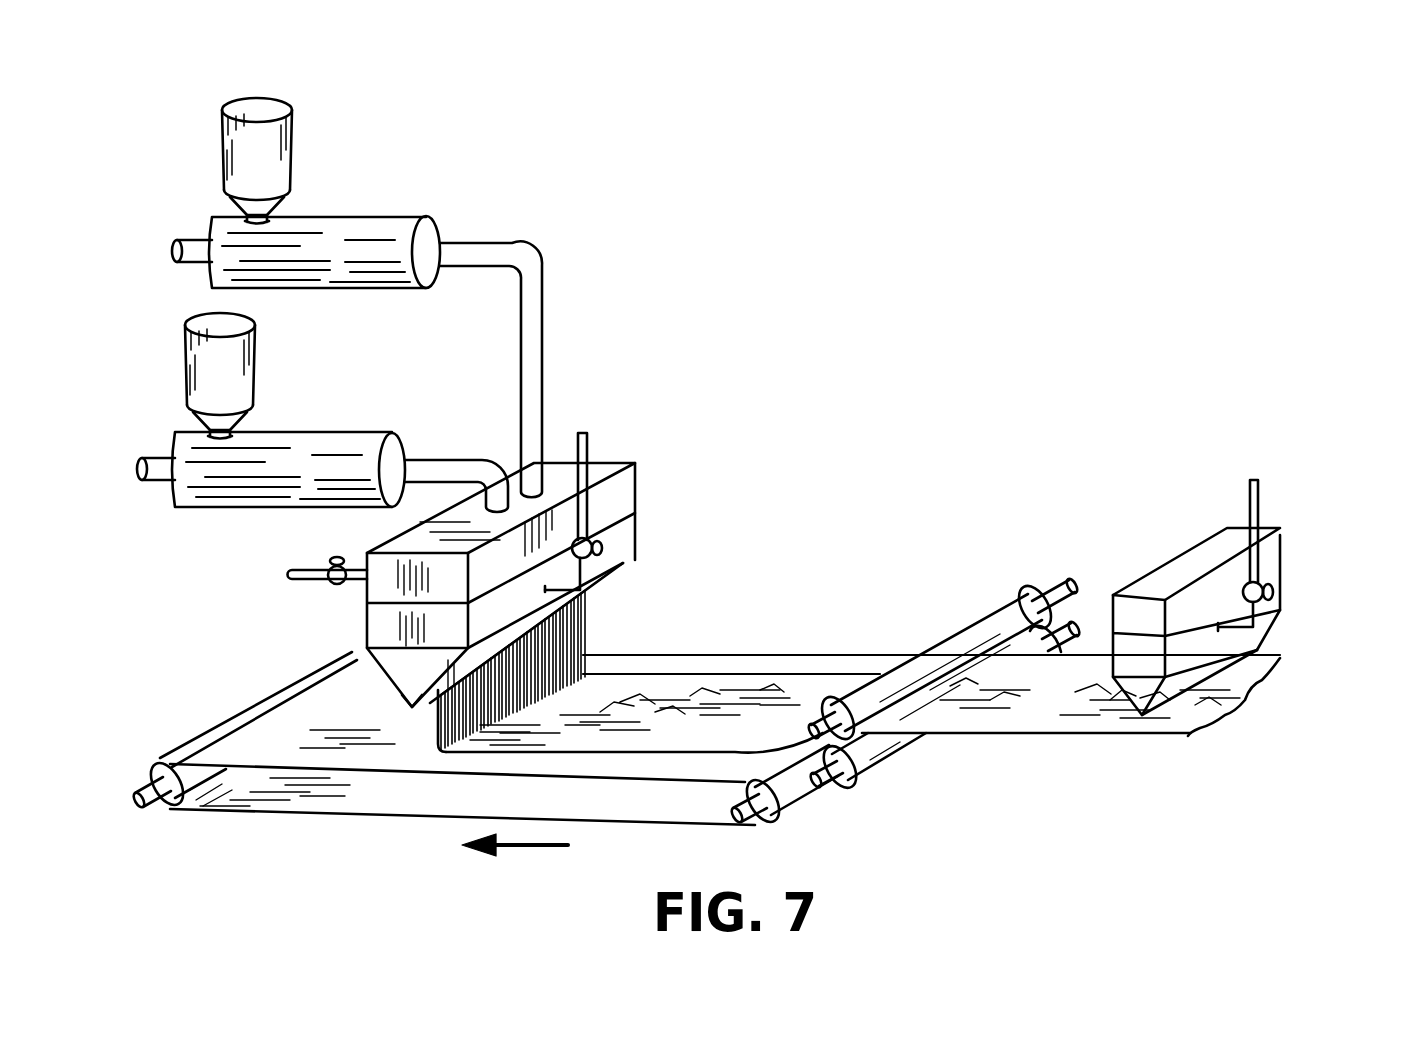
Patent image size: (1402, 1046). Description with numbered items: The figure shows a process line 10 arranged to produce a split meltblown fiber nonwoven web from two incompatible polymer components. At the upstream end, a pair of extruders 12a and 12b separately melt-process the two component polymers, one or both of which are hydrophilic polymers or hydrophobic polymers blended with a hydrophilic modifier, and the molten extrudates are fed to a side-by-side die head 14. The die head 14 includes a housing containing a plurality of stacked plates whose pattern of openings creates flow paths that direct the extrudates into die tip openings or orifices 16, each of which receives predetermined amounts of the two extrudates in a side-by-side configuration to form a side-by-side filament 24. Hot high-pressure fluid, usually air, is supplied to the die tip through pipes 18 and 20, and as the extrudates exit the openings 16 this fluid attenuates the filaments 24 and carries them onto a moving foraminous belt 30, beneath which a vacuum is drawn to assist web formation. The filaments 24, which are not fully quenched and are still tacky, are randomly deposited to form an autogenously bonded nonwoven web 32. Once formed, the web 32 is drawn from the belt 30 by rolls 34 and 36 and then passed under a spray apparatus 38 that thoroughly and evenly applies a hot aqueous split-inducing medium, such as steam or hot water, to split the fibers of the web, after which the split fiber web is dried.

The process line 10 is at (848, 364).
The extruder 12a is at (387, 223).
The extruder 12b is at (348, 437).
The die head 14 is at (630, 491).
The die tip openings 16 is at (423, 713).
The pipe 18 is at (588, 447).
The pipe 20 is at (303, 575).
The filaments 24 is at (587, 636).
The foraminous belt 30 is at (258, 720).
The nonwoven web 32 is at (760, 690).
The roll 34 is at (891, 753).
The roll 36 is at (1003, 606).
The spray apparatus 38 is at (1282, 554).